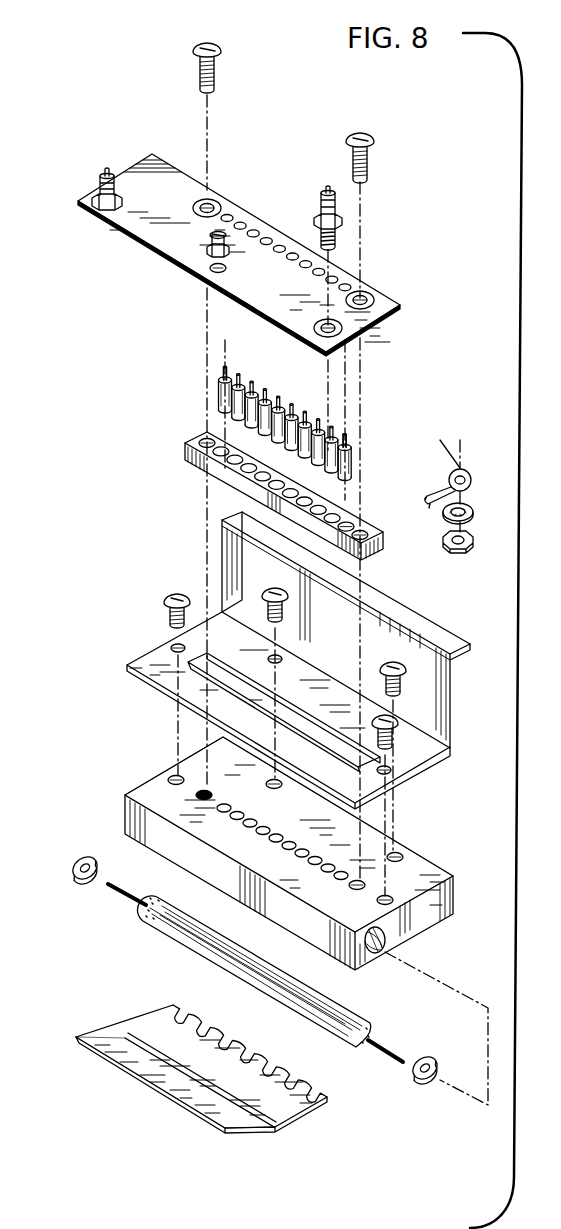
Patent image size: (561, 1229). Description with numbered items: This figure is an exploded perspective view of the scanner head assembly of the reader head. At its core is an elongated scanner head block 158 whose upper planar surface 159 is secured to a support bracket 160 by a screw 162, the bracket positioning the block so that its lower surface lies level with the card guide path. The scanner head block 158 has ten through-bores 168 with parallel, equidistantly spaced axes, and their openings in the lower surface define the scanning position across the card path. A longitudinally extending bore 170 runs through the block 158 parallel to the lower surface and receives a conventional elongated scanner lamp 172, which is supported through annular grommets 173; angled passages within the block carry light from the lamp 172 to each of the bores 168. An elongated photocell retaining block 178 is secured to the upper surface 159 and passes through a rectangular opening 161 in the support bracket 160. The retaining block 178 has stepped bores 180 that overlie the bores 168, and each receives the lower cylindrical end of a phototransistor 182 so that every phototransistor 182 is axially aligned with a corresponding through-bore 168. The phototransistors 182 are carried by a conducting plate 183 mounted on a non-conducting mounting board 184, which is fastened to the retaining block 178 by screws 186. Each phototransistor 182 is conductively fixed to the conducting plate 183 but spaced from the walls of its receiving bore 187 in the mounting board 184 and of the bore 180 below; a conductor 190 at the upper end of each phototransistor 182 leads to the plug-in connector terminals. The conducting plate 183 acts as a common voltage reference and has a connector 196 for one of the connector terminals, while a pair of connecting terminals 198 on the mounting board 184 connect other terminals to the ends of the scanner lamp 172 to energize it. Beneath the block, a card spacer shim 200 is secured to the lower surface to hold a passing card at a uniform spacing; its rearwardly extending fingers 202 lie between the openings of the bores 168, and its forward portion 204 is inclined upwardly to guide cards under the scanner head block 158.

The scanner head block 158 is at (438, 910).
The upper planar surface 159 is at (420, 862).
The support bracket 160 is at (226, 548).
The rectangular opening 161 is at (194, 672).
The screw 162 is at (163, 603).
The through-bores 168 is at (237, 819).
The longitudinally extending bore 170 is at (378, 955).
The scanner lamp 172 is at (220, 957).
The annular grommets 173 is at (78, 880).
The photocell retaining block 178 is at (185, 449).
The stepped bores 180 is at (361, 530).
The phototransistors 182 is at (248, 410).
The conducting plate 183 is at (380, 292).
The non-conducting mounting board 184 is at (373, 328).
The screws 186 is at (200, 45).
The phototransistor receiving bores 187 is at (256, 231).
The conductor 190 is at (254, 388).
The connector 196 is at (208, 250).
The connecting terminals 198 is at (100, 185).
The card spacer shim 200 is at (287, 1110).
The fingers 202 is at (284, 1069).
The forward portion 204 is at (173, 1083).